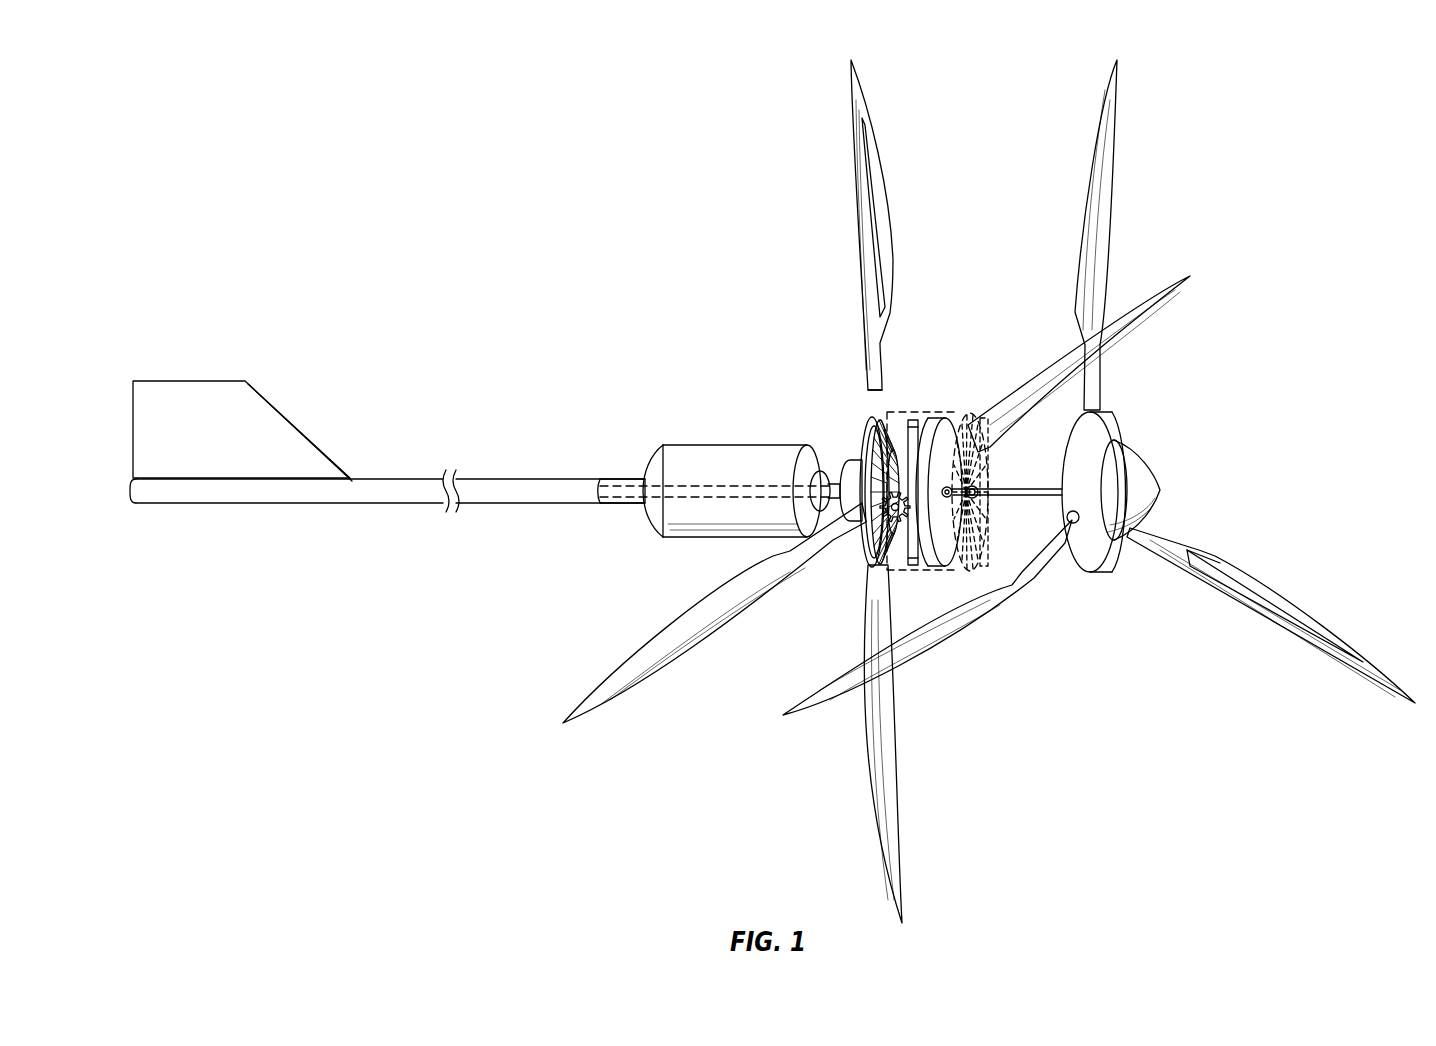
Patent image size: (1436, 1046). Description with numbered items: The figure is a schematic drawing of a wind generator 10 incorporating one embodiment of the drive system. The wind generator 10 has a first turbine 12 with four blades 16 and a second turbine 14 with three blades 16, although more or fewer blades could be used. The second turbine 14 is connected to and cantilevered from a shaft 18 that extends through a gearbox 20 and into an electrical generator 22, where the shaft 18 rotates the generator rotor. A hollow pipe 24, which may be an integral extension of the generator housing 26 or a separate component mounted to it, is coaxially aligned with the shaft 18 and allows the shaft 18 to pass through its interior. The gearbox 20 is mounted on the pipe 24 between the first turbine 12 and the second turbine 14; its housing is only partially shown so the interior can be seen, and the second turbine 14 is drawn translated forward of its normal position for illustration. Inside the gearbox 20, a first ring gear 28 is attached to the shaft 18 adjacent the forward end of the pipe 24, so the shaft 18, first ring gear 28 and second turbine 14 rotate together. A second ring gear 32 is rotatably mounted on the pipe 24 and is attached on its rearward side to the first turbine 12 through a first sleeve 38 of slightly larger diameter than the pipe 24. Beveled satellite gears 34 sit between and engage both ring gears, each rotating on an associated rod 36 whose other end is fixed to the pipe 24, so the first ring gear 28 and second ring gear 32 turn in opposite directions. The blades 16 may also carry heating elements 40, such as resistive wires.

The wind generator 10 is at (558, 222).
The first turbine 12 is at (904, 260).
The second turbine 14 is at (1122, 198).
The blades 16 is at (872, 103).
The shaft 18 is at (996, 492).
The gearbox 20 is at (937, 407).
The electrical generator 22 is at (717, 462).
The pipe 24 is at (975, 496).
The generator housing 26 is at (677, 540).
The first ring gear 28 is at (1002, 550).
The second ring gear 32 is at (886, 422).
The satellite gears 34 is at (905, 425).
The rod 36 is at (890, 446).
The first sleeve 38 is at (851, 460).
The heating elements 40 is at (870, 155).